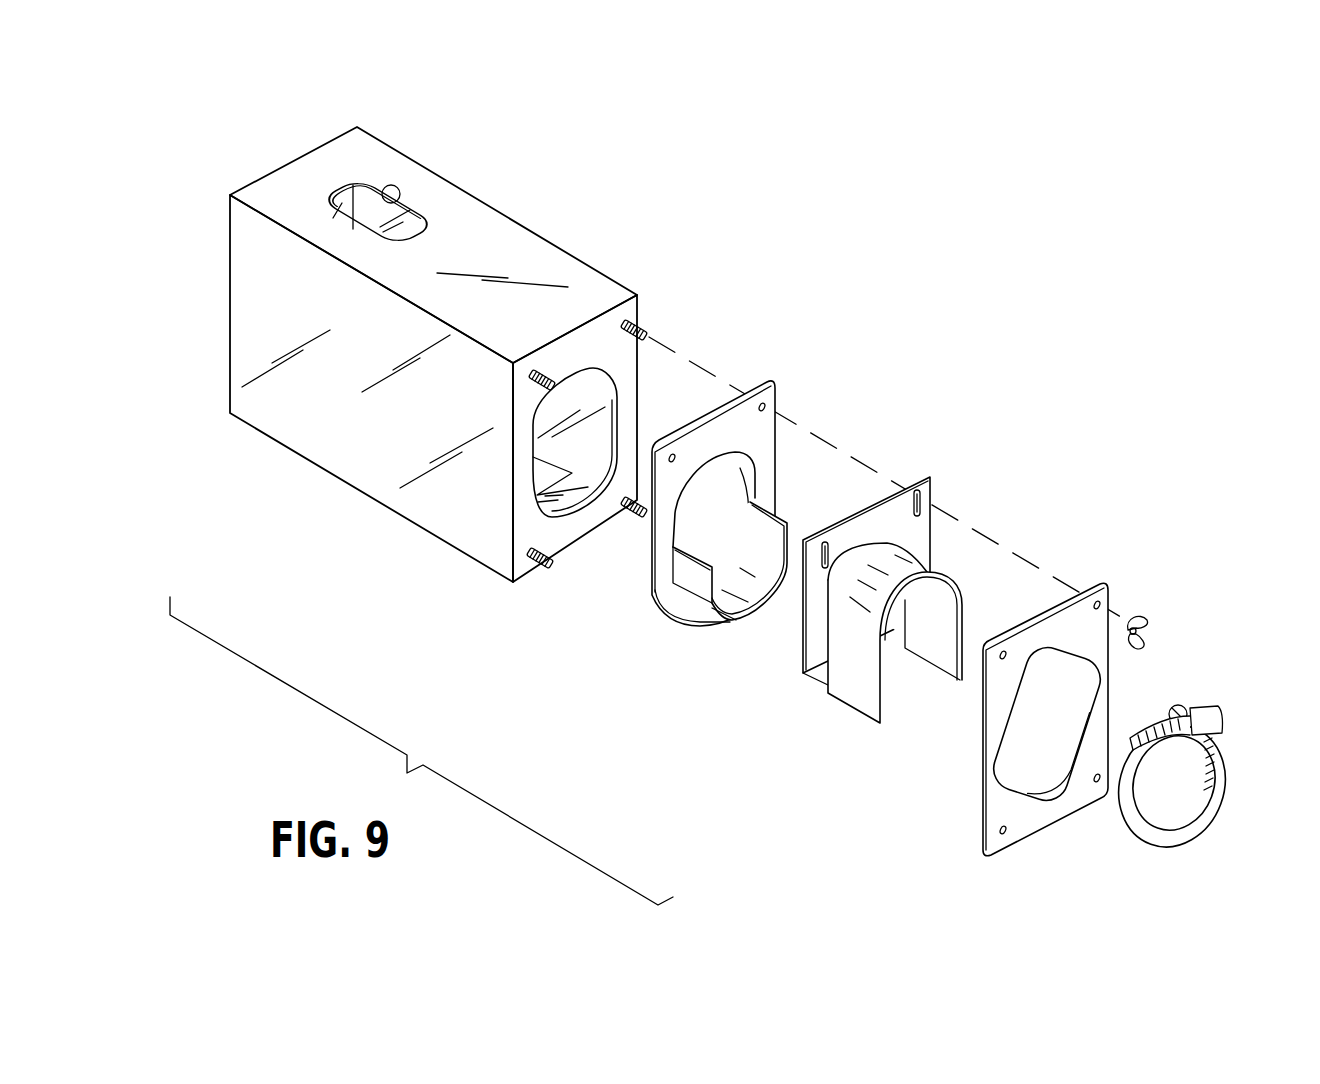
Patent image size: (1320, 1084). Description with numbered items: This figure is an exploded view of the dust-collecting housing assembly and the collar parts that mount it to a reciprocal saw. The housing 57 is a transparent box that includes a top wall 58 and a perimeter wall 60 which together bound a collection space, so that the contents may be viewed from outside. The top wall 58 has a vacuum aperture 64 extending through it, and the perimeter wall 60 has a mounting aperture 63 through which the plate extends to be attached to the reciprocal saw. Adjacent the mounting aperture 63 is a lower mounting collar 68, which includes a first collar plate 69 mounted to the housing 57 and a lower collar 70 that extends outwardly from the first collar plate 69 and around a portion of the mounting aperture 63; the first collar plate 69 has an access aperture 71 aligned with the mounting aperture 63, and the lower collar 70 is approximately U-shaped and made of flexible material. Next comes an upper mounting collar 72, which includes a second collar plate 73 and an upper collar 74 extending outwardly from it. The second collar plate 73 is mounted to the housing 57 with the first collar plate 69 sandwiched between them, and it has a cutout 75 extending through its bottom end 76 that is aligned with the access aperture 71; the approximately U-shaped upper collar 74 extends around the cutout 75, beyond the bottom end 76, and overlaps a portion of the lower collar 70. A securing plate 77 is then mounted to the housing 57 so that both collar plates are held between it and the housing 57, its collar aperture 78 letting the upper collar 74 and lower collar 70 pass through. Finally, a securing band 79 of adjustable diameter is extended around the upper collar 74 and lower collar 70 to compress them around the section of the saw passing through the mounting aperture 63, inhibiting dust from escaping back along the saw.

The housing 57 is at (357, 127).
The top wall 58 is at (508, 247).
The perimeter wall 60 is at (247, 322).
The mounting aperture 63 is at (613, 402).
The vacuum aperture 64 is at (393, 185).
The lower mounting collar 68 is at (774, 380).
The first collar plate 69 is at (663, 598).
The lower collar 70 is at (744, 603).
The access aperture 71 is at (762, 493).
The upper mounting collar 72 is at (915, 472).
The second collar plate 73 is at (908, 532).
The upper collar 74 is at (953, 608).
The cutout 75 is at (897, 625).
The bottom end 76 is at (817, 667).
The securing plate 77 is at (1098, 580).
The collar aperture 78 is at (1088, 697).
The securing band 79 is at (1218, 797).